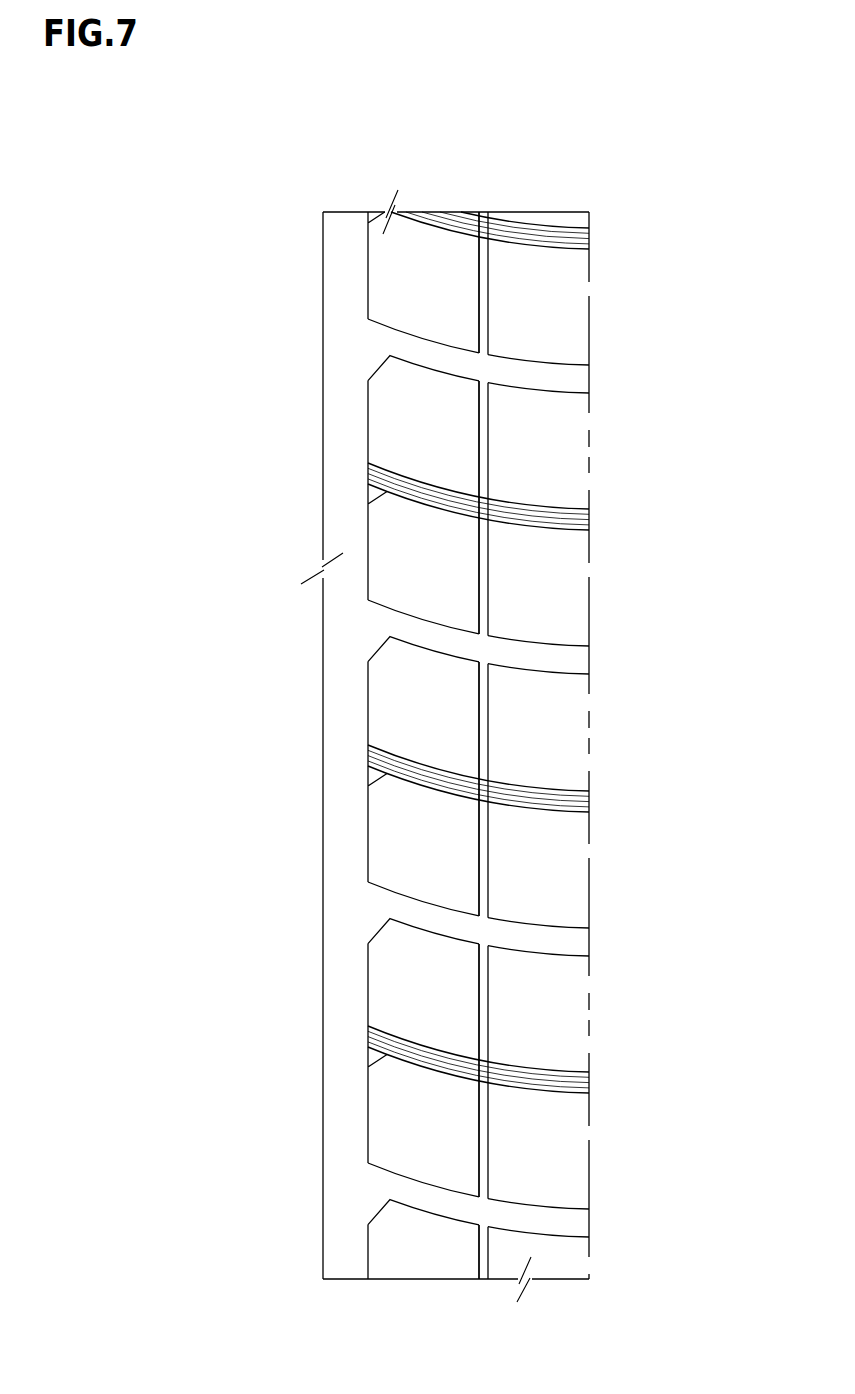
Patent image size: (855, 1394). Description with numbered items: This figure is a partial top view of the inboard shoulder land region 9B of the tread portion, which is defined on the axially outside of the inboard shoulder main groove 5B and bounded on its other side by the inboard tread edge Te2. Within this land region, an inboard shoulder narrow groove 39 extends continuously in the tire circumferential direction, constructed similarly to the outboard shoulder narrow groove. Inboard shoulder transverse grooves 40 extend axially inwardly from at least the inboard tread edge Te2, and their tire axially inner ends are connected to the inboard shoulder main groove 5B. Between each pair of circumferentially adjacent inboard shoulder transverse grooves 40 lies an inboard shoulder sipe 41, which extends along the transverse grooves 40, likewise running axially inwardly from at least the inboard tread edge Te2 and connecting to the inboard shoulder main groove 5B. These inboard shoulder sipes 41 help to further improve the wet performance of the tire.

The inboard shoulder main groove 5B is at (342, 260).
The inboard shoulder land region 9B is at (435, 260).
The inboard shoulder narrow groove 39 is at (483, 272).
The inboard tread edge Te2 is at (591, 252).
The inboard shoulder transverse grooves 40 is at (510, 373).
The inboard shoulder sipes 41 is at (457, 500).